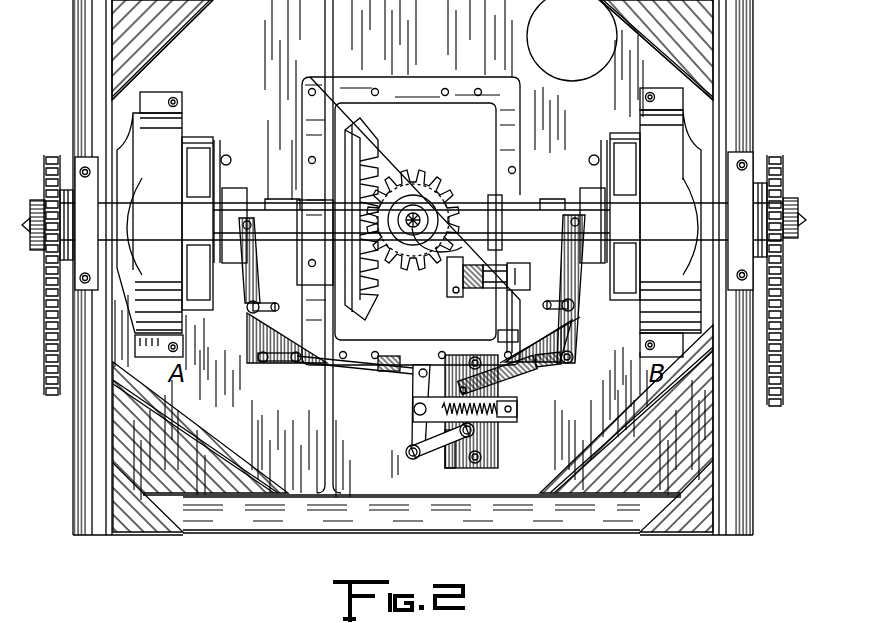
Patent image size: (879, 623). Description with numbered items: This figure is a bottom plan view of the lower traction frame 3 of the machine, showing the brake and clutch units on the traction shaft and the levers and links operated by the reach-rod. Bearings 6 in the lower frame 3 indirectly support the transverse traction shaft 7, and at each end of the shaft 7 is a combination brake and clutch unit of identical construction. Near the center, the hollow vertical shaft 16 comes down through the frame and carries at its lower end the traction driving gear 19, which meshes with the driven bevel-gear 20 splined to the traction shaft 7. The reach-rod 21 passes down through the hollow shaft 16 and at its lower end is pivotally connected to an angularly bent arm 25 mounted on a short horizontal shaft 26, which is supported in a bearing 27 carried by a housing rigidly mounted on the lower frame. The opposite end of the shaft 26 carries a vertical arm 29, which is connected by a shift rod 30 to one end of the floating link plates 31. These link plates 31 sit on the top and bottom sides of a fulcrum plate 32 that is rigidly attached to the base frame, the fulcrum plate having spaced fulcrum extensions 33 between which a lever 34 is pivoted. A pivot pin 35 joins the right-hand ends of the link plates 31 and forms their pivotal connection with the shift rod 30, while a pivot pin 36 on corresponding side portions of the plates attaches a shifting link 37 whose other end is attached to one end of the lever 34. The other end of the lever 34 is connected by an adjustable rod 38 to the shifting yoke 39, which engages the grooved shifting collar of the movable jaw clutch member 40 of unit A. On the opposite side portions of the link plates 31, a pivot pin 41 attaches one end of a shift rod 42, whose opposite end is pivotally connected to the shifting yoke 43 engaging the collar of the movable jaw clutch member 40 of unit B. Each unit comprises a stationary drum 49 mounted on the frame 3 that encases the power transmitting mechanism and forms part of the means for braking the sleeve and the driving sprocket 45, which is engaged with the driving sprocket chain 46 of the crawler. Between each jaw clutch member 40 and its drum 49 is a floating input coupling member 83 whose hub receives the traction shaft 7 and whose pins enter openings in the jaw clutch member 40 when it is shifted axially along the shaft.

The lower traction frame 3 is at (280, 522).
The bearings 6 is at (87, 200).
The traction shaft 7 is at (520, 210).
The hollow vertical shaft 16 is at (437, 207).
The traction driving gear 19 is at (413, 162).
The driven bevel-gear 20 is at (366, 144).
The reach-rod 21 is at (448, 207).
The angularly bent arm 25 is at (431, 283).
The short horizontal shaft 26 is at (478, 296).
The bearing 27 is at (504, 264).
The vertical arm 29 is at (530, 272).
The shift rod 30 is at (552, 375).
The floating link plates 31 is at (490, 420).
The fulcrum plate 32 is at (490, 453).
The fulcrum extensions 33 is at (430, 397).
The lever 34 is at (407, 433).
The pivot pin 35 is at (500, 420).
The pivot pin 36 is at (447, 453).
The shifting link 37 is at (428, 455).
The adjustable rod 38 is at (372, 375).
The shifting yoke 39 is at (257, 272).
The movable jaw clutch member 40 is at (222, 150).
The pivot pin 41 is at (460, 383).
The shift rod 42 is at (522, 375).
The shifting yoke 43 is at (580, 287).
The driving gear or sprocket 45 is at (45, 285).
The driving sprocket chain 46 is at (43, 362).
The stationary drum 49 is at (173, 135).
The floating input coupling member 83 is at (187, 210).